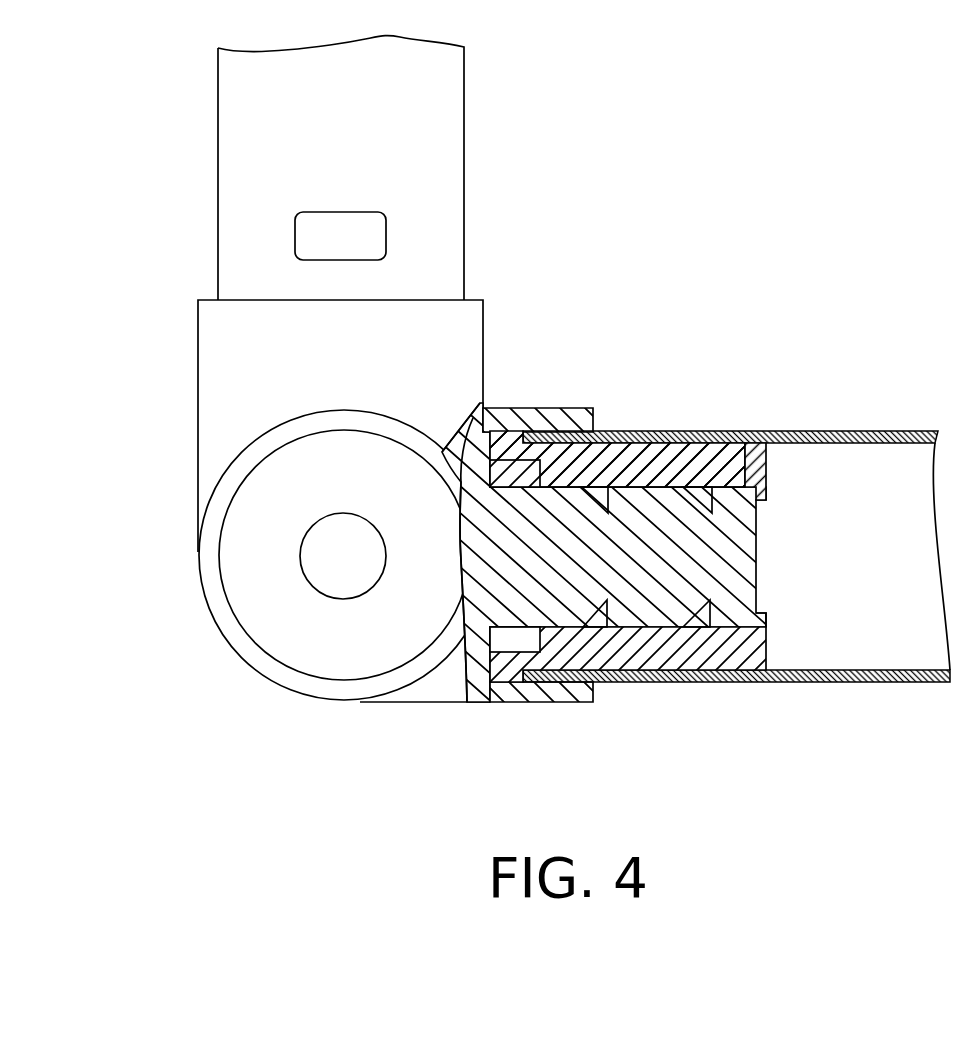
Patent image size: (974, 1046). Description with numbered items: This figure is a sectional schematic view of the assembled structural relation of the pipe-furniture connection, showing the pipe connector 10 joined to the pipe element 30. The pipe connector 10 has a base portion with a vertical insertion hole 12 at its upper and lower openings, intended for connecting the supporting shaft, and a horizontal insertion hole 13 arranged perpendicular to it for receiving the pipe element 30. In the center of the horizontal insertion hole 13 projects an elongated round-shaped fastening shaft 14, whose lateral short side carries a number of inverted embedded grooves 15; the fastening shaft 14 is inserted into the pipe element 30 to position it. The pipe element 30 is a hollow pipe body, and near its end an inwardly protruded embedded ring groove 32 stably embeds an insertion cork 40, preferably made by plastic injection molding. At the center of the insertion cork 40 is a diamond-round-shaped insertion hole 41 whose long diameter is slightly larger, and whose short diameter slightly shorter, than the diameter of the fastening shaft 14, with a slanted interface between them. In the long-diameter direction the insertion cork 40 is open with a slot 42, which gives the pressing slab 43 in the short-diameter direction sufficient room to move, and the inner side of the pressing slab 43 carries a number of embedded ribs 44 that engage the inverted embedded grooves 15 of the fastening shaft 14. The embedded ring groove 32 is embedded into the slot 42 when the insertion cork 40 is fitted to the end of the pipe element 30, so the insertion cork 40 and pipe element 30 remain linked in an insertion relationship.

The pipe connector 10 is at (232, 422).
The vertical insertion hole 12 is at (255, 601).
The horizontal insertion hole 13 is at (507, 678).
The fastening shaft 14 is at (649, 598).
The inverted embedded grooves 15 is at (607, 600).
The pipe element 30 is at (855, 431).
The embedded ring groove 32 is at (591, 701).
The insertion cork 40 is at (511, 411).
The insertion hole 41 is at (637, 497).
The slot 42 is at (760, 613).
The pressing slab 43 is at (745, 441).
The embedded ribs 44 is at (700, 620).